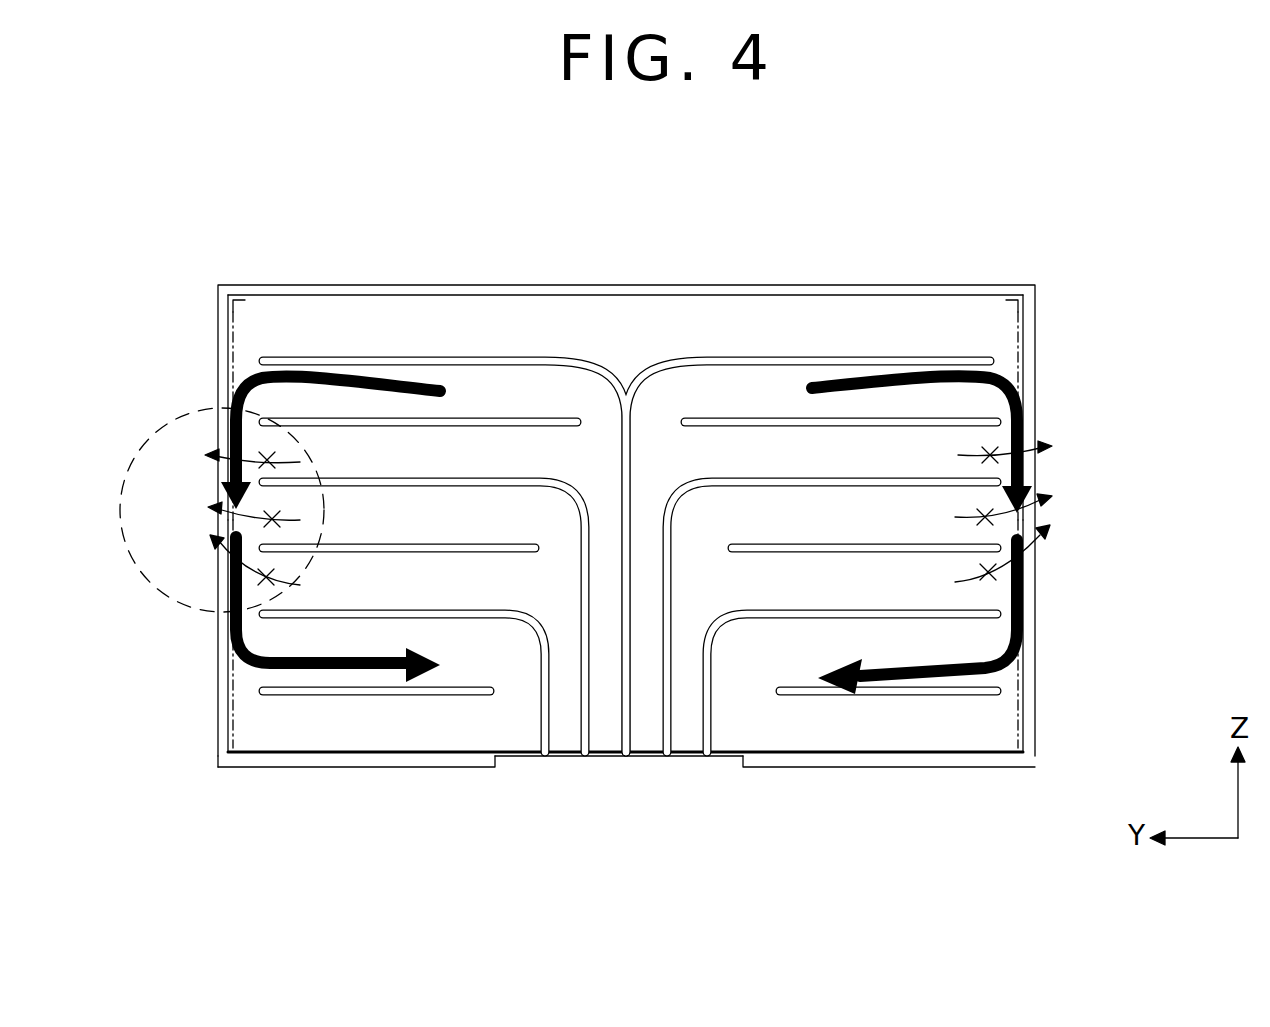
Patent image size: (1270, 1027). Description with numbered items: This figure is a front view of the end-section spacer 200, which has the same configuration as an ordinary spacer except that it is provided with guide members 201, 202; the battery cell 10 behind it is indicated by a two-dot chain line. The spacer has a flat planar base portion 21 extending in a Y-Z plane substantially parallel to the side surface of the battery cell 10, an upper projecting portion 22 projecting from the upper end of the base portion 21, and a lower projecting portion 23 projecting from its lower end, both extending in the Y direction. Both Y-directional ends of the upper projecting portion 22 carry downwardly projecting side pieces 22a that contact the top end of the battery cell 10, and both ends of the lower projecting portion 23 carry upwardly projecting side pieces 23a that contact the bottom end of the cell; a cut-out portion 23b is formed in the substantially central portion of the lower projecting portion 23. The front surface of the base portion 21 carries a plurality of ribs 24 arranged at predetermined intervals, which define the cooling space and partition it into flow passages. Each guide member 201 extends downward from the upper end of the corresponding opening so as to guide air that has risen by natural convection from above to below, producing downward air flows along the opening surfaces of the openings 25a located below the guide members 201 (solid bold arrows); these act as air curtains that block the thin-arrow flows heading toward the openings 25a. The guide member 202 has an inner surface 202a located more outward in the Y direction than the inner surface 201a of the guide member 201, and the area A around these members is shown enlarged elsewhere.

The end-section spacer 200 is at (300, 282).
The battery cell 10 is at (233, 768).
The base portion 21 is at (620, 480).
The upper projecting portion 22 is at (613, 290).
The side piece 22a is at (227, 297).
The lower projecting portion 23 is at (400, 768).
The side piece 23a is at (230, 748).
The cut-out portion 23b is at (608, 760).
The rib 24 is at (432, 368).
The opening 25a is at (230, 487).
The guide member 201 is at (228, 333).
The inner surface 201a is at (235, 360).
The guide member 202 is at (228, 667).
The inner surface 202a is at (232, 700).
The area A is at (130, 440).